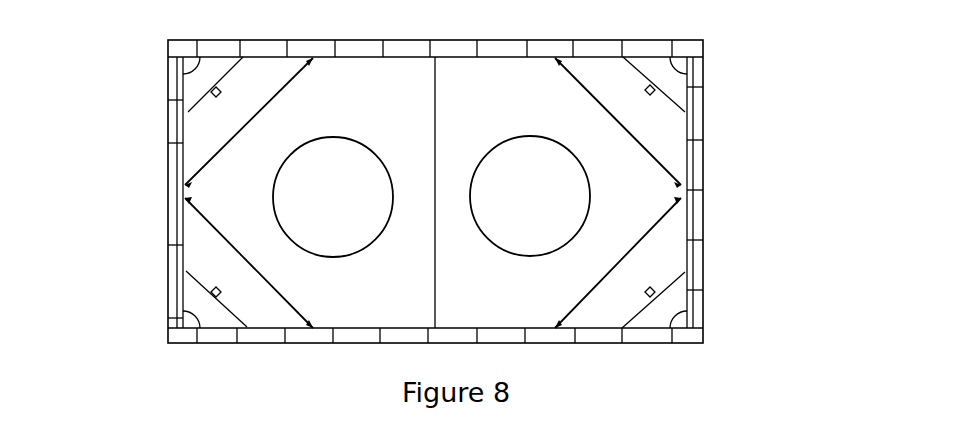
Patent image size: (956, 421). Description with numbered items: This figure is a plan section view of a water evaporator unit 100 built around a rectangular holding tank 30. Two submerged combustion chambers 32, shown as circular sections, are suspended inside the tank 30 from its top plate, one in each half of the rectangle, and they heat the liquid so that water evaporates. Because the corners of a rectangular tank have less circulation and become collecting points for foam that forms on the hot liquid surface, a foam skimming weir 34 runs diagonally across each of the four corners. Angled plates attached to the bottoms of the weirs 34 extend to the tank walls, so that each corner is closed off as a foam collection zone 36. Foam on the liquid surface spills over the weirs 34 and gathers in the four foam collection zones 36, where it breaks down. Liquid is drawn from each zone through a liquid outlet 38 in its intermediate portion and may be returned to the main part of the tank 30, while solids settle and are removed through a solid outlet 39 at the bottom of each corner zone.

The water evaporator unit 100 is at (193, 366).
The rectangular holding tank 30 is at (458, 328).
The submerged combustion chamber 32 is at (274, 196).
The foam skimming weir 34 is at (245, 123).
The foam collection zone 36 is at (250, 80).
The liquid outlet 38 is at (212, 93).
The solid outlet 39 is at (197, 326).